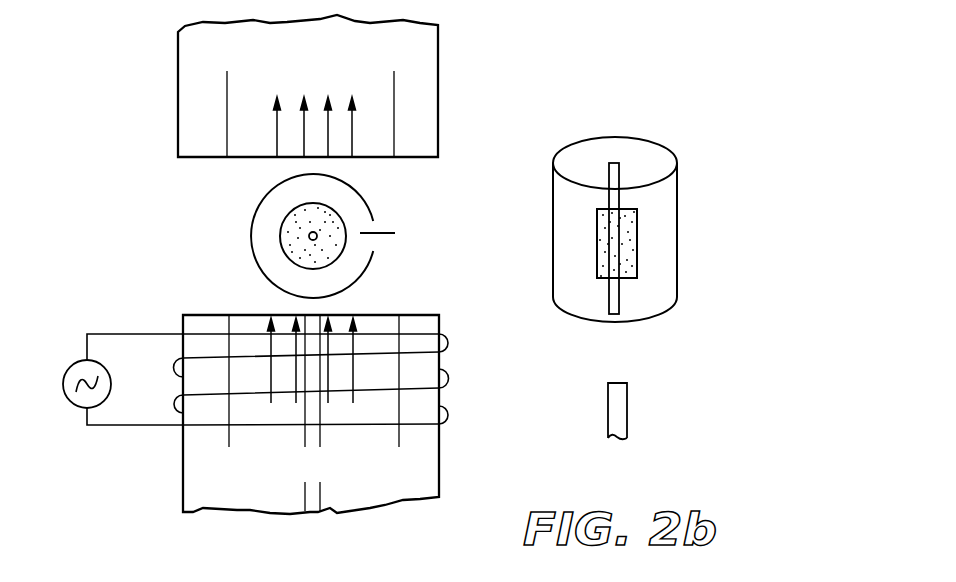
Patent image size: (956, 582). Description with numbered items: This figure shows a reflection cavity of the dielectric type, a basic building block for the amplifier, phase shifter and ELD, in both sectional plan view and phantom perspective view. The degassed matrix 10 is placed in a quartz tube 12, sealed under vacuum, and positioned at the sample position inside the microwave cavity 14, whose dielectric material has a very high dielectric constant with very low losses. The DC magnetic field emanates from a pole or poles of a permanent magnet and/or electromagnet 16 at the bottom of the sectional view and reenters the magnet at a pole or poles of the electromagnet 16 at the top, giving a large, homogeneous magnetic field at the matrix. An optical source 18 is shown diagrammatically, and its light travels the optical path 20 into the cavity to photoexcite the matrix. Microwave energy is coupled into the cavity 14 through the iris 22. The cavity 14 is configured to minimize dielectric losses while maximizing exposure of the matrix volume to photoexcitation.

The degassed matrix 10 is at (310, 238).
The quartz tube 12 is at (710, 263).
The microwave cavity 14 is at (358, 272).
The electromagnet 16 is at (438, 115).
The optical source 18 is at (627, 412).
The optical path 20 is at (607, 327).
The iris 22 is at (382, 227).